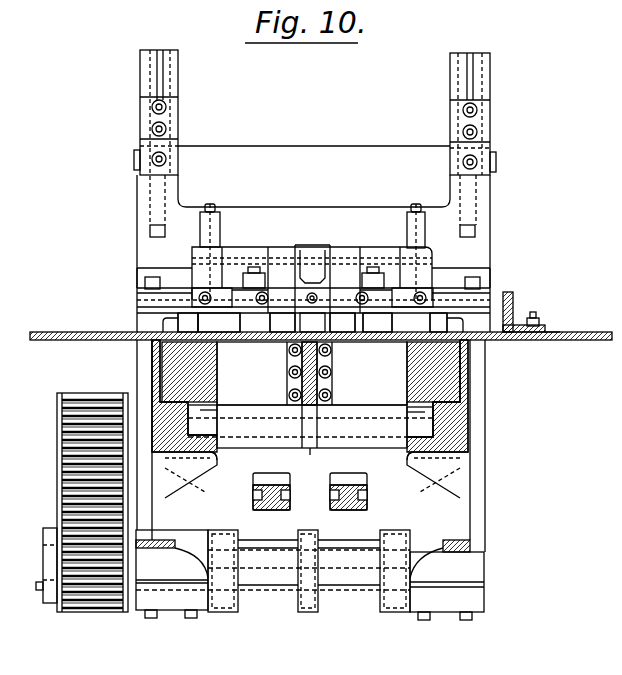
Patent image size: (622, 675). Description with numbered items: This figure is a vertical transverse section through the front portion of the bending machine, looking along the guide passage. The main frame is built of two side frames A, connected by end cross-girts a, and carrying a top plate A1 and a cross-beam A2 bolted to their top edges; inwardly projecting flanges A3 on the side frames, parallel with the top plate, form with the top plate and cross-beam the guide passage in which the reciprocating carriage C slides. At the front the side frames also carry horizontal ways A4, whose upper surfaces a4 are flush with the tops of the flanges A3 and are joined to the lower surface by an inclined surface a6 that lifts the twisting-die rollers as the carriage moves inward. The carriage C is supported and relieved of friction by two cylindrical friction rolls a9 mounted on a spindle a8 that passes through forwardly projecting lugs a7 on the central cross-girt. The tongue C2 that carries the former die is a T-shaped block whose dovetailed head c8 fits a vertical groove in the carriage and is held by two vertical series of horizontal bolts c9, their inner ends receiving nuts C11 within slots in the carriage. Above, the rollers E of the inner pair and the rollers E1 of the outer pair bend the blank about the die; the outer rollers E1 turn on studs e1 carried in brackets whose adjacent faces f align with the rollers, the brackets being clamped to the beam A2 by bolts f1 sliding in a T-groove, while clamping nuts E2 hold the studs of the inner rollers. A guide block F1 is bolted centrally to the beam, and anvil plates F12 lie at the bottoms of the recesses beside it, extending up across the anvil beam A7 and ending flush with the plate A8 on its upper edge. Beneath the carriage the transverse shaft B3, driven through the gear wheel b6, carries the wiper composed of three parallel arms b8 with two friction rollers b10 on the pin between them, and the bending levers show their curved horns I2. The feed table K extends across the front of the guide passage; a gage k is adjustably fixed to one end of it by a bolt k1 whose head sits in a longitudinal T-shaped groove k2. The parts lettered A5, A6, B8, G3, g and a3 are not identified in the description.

The side frame A is at (163, 516).
The top plate A1 is at (262, 247).
The cross-beam A2 is at (137, 279).
The inwardly projecting flange A3 is at (435, 418).
The horizontal flange or way A4 is at (217, 462).
The cross bar A5 is at (316, 158).
The upright post A6 is at (165, 50).
The anvil beam A7 is at (205, 258).
The plate A8 is at (420, 248).
The transverse shaft B3 is at (498, 562).
The shaft hub B8 is at (43, 570).
The gear wheel b6 is at (60, 464).
The parallel arm b8 is at (309, 571).
The friction roller b10 is at (270, 546).
The reciprocating carriage C is at (312, 340).
The nut C11 is at (311, 372).
The tongue C2 is at (300, 388).
The head of T-shaped block c8 is at (289, 352).
The horizontal bolt c9 is at (331, 393).
The inner roller E is at (312, 322).
The outer roller E1 is at (219, 322).
The clamping nut E2 is at (377, 322).
The stud e1 is at (258, 264).
The guide block F1 is at (213, 288).
The anvil plate F12 is at (282, 250).
The adjacent surface of bracket f is at (283, 298).
The bolt f1 is at (155, 275).
The center guide G3 is at (312, 288).
The bolt g is at (316, 298).
The horn I2 is at (330, 490).
The feed table K is at (62, 332).
The gage k is at (513, 305).
The bolt k1 is at (535, 318).
The T-shaped longitudinal groove k2 is at (572, 327).
The end cross-girt a is at (407, 422).
The block a3 is at (215, 430).
The upper horizontal surface of way a4 is at (217, 396).
The inclined connecting surface a6 is at (210, 412).
The forwardly projecting lug a7 is at (310, 450).
The spindle a8 is at (415, 412).
The friction roll a9 is at (310, 426).